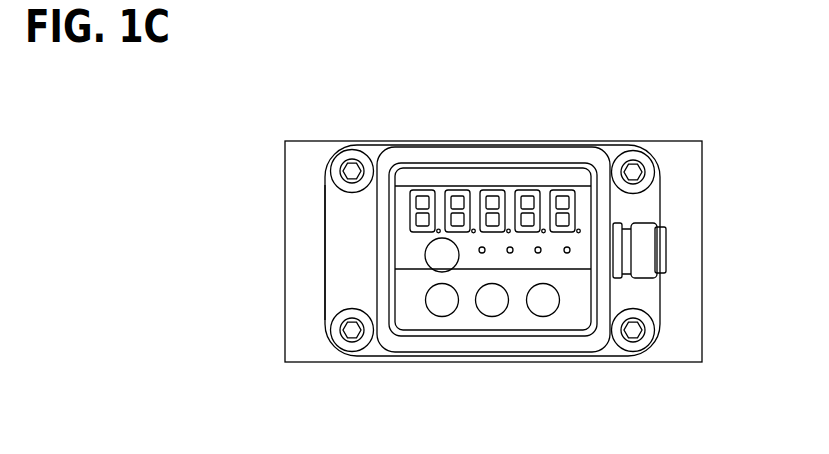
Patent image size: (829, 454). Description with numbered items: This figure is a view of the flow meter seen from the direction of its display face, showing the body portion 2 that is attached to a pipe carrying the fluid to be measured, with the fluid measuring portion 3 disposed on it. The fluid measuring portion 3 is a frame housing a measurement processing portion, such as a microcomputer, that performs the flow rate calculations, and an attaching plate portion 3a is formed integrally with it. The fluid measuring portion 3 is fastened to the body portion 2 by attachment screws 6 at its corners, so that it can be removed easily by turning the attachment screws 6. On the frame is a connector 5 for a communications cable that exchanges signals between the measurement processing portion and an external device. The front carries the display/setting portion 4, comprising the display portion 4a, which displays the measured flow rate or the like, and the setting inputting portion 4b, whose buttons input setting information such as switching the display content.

The body portion 2 is at (318, 362).
The fluid measuring portion 3 is at (438, 347).
The attaching plate portion 3a is at (325, 258).
The display/setting portion 4 is at (572, 315).
The display portion 4a is at (512, 185).
The setting inputting portion 4b is at (473, 315).
The connector 5 is at (650, 248).
The attachment screws 6 is at (355, 162).